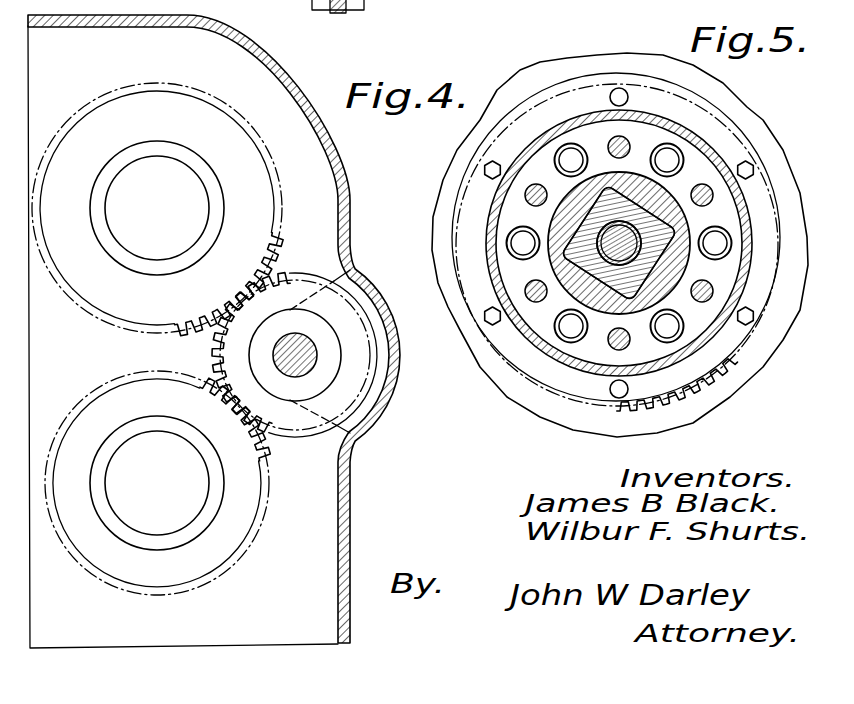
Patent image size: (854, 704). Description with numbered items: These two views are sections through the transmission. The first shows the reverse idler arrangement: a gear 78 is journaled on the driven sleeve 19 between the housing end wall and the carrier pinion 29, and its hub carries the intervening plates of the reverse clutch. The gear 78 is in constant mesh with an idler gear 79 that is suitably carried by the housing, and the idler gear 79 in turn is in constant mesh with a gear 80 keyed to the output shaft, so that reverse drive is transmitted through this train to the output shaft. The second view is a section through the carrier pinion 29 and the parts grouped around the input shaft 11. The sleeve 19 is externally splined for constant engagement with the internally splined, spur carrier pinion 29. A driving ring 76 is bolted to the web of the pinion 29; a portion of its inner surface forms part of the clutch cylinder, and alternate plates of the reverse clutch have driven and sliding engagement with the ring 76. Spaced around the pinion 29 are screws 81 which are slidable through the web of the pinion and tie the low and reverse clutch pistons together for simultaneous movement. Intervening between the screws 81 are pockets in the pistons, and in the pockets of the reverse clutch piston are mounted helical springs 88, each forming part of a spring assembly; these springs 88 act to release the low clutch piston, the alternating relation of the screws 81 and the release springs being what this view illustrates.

In FIG. 4, the gear 78 is at (115, 88).
In FIG. 4, the idler gear 79 is at (213, 350).
In FIG. 4, the gear 80 is at (233, 560).
In FIG. 5, the carrier pinion 29 is at (596, 180).
In FIG. 5, the sleeve 19 is at (620, 200).
In FIG. 5, the driving or input shaft 11 is at (647, 213).
In FIG. 5, the driving ring 76 is at (518, 332).
In FIG. 5, the springs 88 is at (563, 340).
In FIG. 5, the screws 81 is at (607, 352).